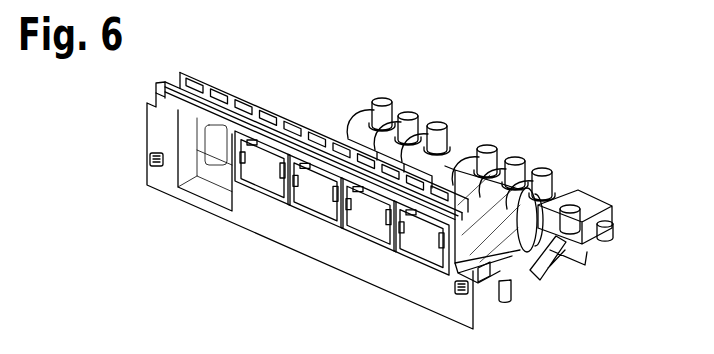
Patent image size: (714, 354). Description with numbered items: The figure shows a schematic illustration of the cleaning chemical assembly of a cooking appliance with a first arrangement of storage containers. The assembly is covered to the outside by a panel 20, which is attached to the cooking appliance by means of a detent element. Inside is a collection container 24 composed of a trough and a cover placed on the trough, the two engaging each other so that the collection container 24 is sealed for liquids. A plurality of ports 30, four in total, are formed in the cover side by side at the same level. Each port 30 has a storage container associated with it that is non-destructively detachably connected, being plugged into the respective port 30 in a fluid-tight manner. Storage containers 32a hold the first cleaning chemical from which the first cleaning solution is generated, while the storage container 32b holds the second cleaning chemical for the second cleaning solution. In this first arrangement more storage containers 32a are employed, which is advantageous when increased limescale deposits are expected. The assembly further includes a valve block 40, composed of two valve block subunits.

The panel 20 is at (155, 181).
The storage container holding the first cleaning chemical 32a is at (355, 222).
The storage container holding the second cleaning chemical 32b is at (418, 245).
The valve block 40 is at (548, 154).
The collection container 24 is at (512, 271).
The port 30 is at (538, 205).